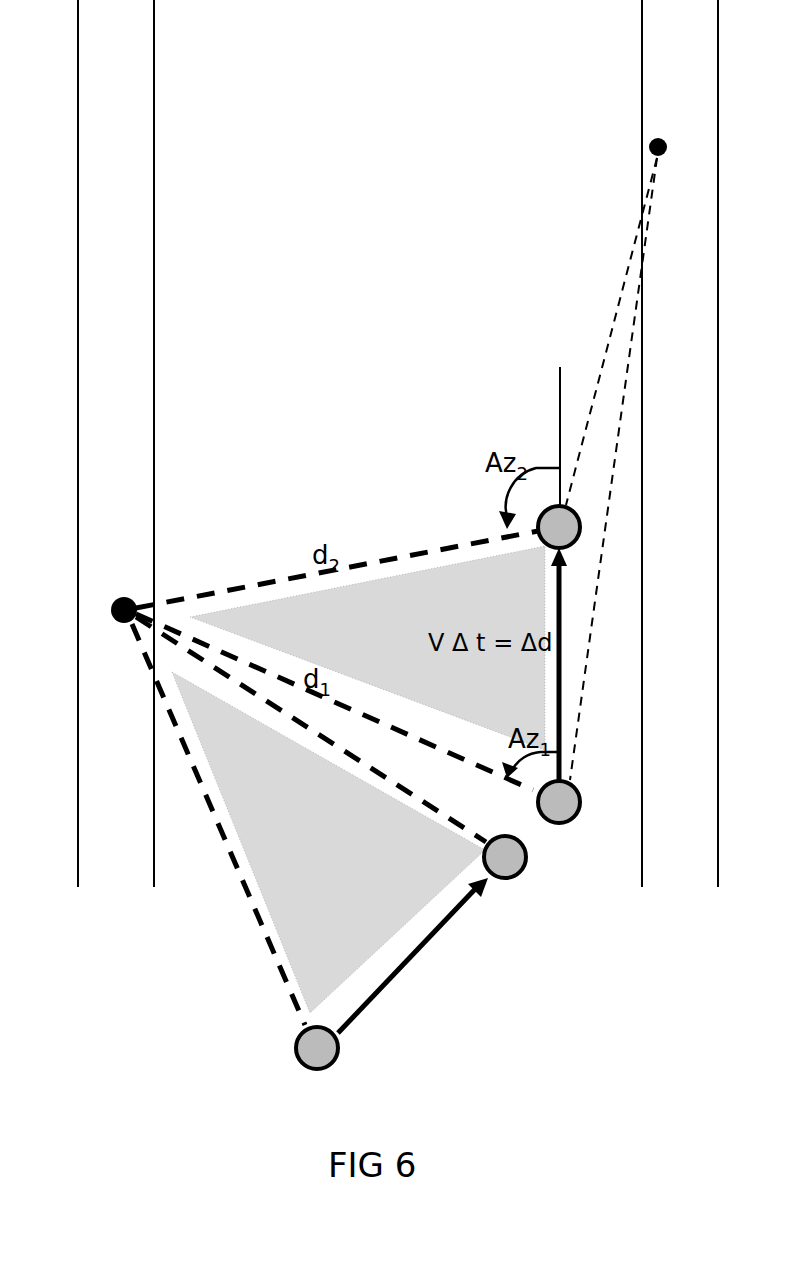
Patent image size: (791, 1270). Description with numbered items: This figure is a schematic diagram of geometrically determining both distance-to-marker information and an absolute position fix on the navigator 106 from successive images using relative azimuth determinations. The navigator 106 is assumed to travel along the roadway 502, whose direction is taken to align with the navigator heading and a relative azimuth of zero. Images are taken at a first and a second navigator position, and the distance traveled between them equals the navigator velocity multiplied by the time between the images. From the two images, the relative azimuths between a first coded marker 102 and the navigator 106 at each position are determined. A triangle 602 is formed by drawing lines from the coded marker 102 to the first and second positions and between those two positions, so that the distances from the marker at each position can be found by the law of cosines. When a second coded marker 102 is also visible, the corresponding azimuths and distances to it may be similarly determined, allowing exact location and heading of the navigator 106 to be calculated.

The coded marker 102 is at (110, 610).
The navigator 106 is at (559, 824).
The roadway 502 is at (400, 278).
The triangle 602 is at (384, 626).